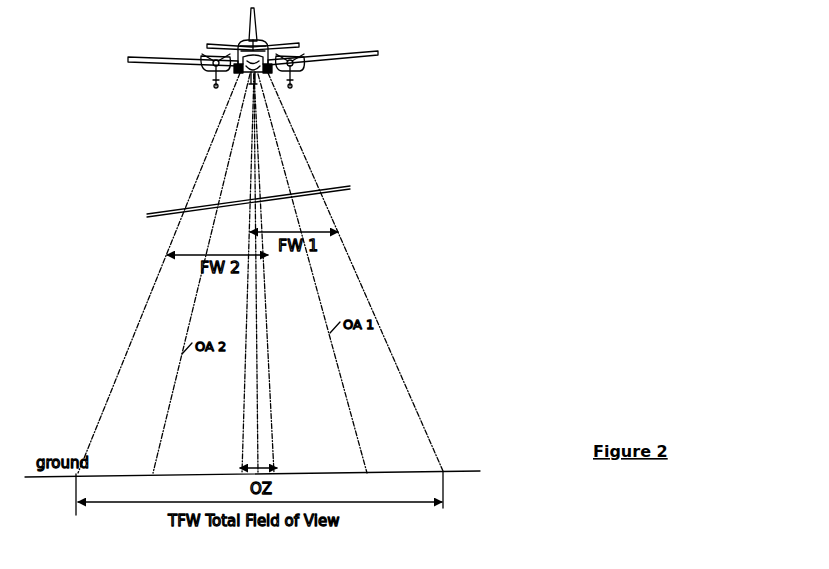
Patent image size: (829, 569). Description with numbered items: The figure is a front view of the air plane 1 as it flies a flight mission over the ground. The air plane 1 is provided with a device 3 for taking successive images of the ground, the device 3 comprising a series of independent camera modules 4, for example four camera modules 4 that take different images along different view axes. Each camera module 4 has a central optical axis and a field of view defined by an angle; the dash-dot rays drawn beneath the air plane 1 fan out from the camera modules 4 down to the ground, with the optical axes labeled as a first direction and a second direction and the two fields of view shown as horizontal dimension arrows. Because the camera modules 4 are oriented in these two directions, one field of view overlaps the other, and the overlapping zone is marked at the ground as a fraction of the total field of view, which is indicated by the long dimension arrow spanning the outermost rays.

The air plane 1 is at (264, 43).
The device for taking successive images 3 is at (280, 74).
The camera module 4 is at (240, 73).